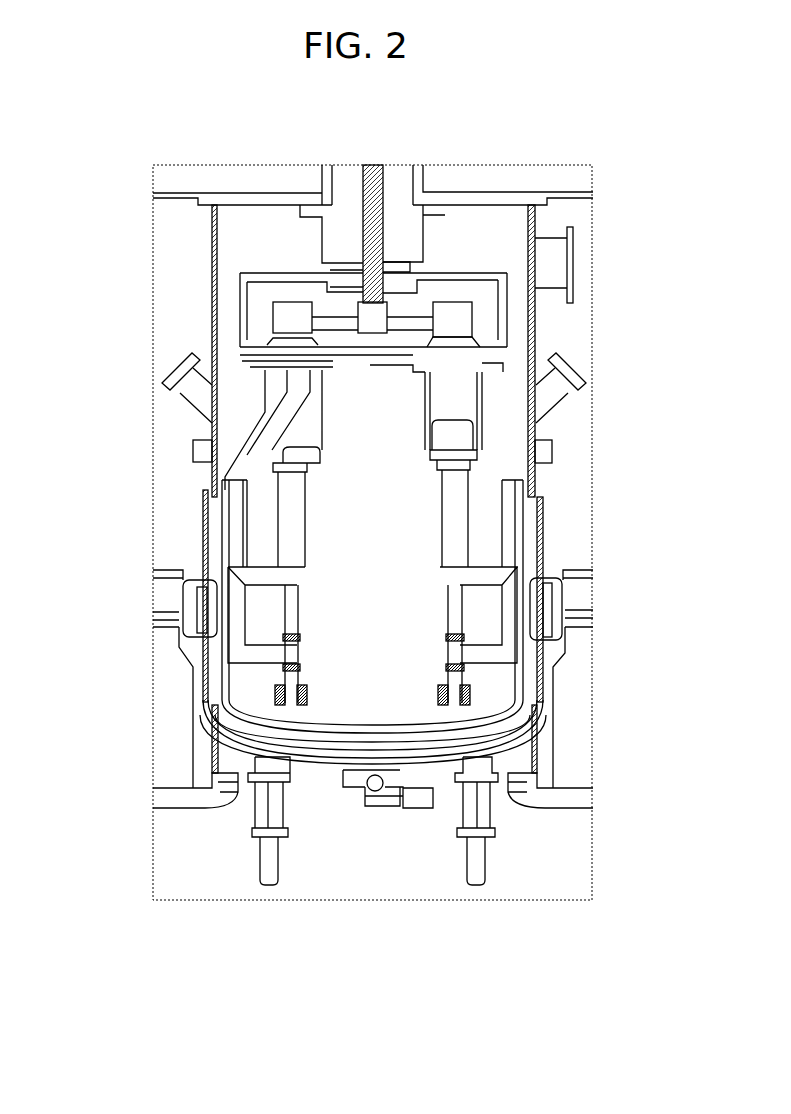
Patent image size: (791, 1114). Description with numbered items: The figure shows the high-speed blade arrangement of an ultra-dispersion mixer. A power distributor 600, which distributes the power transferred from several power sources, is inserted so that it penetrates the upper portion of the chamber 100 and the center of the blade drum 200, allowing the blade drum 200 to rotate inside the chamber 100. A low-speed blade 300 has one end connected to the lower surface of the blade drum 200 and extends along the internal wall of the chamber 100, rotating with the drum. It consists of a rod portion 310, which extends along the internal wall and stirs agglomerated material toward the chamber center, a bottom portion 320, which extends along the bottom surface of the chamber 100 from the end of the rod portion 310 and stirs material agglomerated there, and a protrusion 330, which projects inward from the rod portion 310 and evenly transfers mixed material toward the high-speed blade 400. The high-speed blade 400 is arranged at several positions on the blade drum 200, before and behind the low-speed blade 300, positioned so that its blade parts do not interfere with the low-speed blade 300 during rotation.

The chamber 100 is at (212, 470).
The blade drum 200 is at (510, 298).
The low-speed blade 300 is at (215, 668).
The rod portion 310 is at (205, 550).
The bottom portion 320 is at (323, 763).
The protrusion 330 is at (200, 613).
The high-speed blade 400 is at (255, 500).
The power distributor 600 is at (445, 214).